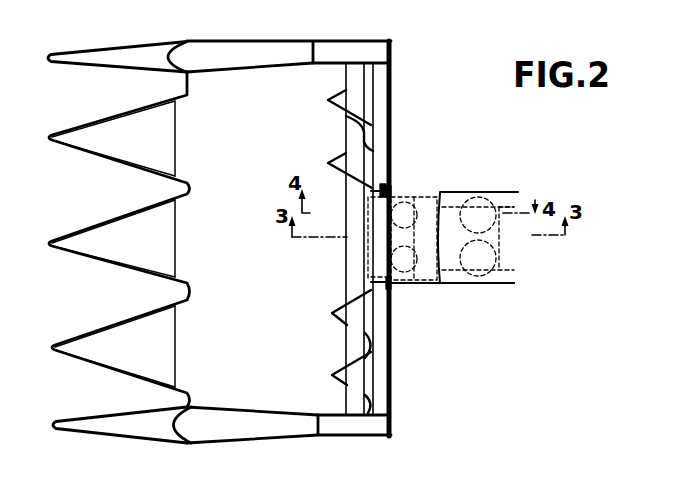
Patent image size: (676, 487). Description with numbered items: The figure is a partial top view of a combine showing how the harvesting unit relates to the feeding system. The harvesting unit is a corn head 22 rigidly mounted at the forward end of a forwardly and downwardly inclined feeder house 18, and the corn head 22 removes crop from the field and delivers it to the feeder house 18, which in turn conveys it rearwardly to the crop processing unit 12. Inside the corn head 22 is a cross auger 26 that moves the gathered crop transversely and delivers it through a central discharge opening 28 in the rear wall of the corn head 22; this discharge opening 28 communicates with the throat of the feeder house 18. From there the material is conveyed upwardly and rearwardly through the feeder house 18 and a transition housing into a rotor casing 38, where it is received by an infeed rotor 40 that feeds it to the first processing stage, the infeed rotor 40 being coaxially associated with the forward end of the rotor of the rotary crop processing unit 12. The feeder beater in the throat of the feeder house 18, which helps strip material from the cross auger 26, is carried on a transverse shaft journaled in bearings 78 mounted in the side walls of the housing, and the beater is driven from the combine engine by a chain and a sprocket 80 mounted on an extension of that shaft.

The crop processing unit 12 is at (479, 173).
The feeder house 18 is at (424, 290).
The corn head 22 is at (248, 34).
The cross auger 26 is at (328, 99).
The central discharge opening 28 is at (363, 222).
The rotor casing 38 is at (500, 284).
The infeed rotor 40 is at (514, 206).
The bearings 78 is at (399, 196).
The sprocket 80 is at (393, 190).